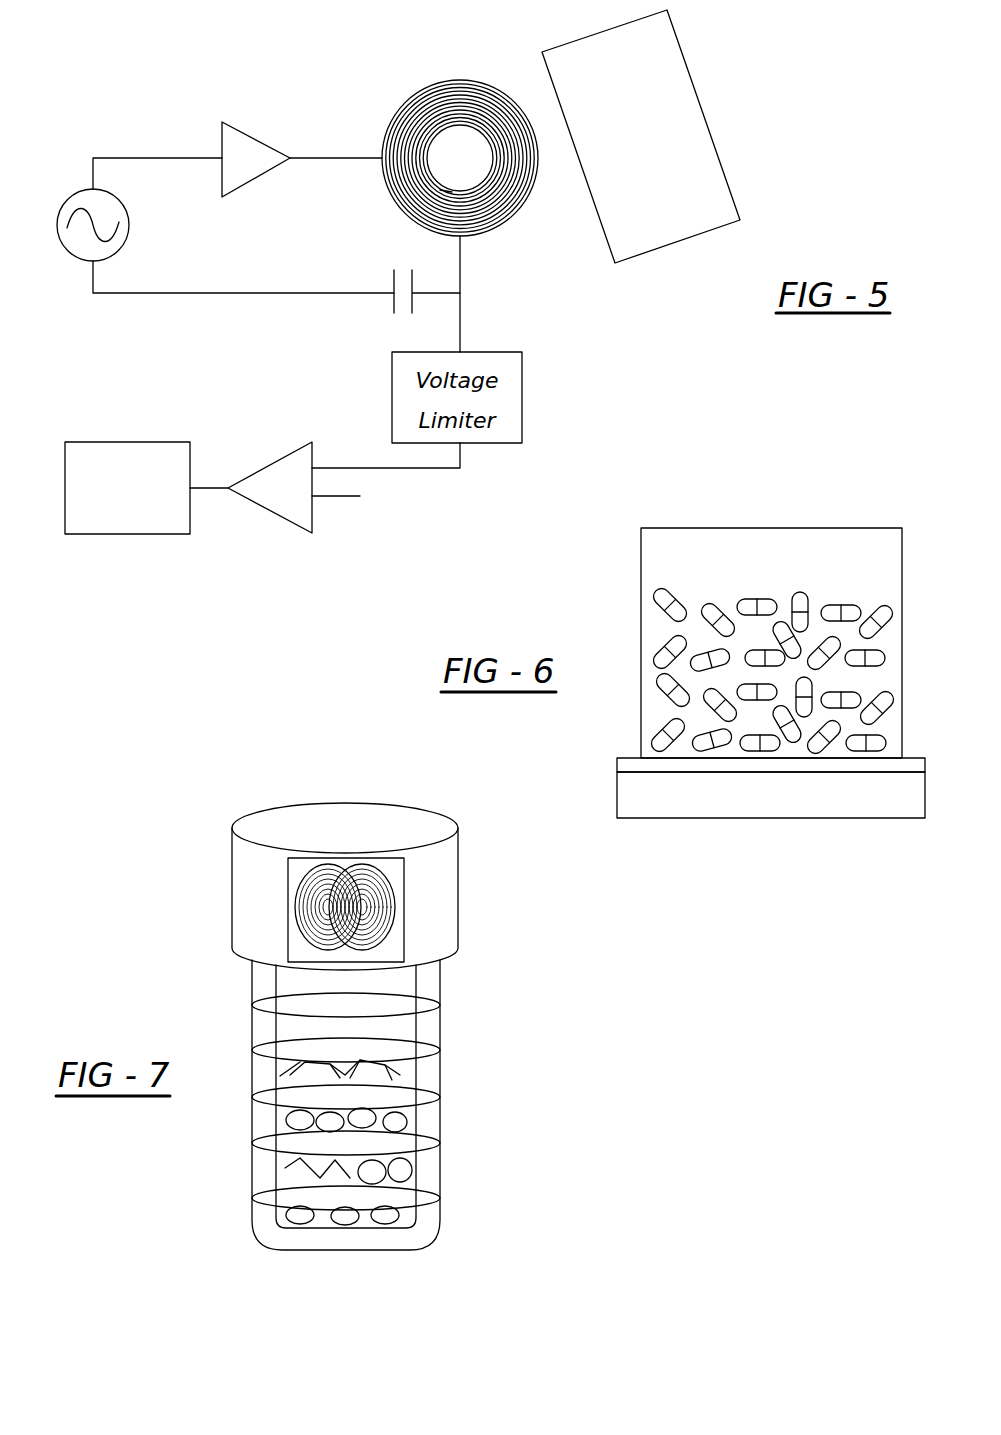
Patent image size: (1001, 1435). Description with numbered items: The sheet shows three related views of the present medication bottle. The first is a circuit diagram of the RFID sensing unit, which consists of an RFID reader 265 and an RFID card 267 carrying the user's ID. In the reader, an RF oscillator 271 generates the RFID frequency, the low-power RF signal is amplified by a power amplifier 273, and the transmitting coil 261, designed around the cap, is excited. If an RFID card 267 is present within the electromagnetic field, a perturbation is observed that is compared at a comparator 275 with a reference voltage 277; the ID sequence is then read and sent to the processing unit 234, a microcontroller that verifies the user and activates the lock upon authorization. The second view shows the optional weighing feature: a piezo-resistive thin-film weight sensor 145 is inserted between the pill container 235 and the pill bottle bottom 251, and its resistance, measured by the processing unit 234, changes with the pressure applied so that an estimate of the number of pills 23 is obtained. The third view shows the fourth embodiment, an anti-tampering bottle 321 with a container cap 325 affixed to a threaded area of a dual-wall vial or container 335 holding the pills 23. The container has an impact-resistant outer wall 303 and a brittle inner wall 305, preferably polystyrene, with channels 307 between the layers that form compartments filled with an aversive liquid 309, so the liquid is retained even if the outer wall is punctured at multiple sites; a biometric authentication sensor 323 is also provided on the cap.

In FIG. 5, the transmitting coil 261 is at (433, 84).
In FIG. 5, the RFID card 267 is at (683, 215).
In FIG. 5, the power amplifier 273 is at (218, 137).
In FIG. 5, the RF oscillator 271 is at (70, 253).
In FIG. 5, the RFID reader 265 is at (582, 356).
In FIG. 5, the processing unit 234 is at (138, 509).
In FIG. 5, the comparator 275 is at (253, 554).
In FIG. 5, the reference voltage 277 is at (399, 522).
In FIG. 6, the pill container 235 is at (801, 528).
In FIG. 6, the pills 23 is at (669, 721).
In FIG. 7, the pills 23 is at (295, 1175).
In FIG. 6, the weight sensor 145 is at (628, 764).
In FIG. 6, the pill bottle bottom 251 is at (641, 791).
In FIG. 7, the bottle 321 is at (168, 896).
In FIG. 7, the container cap 325 is at (252, 883).
In FIG. 7, the fingerprint sensor 323 is at (380, 907).
In FIG. 7, the dual-wall vial or container 335 is at (252, 1028).
In FIG. 7, the channels 307 is at (422, 1006).
In FIG. 7, the outer wall 303 is at (277, 1210).
In FIG. 7, the inner wall 305 is at (290, 1215).
In FIG. 7, the aversive liquid 309 is at (340, 1198).